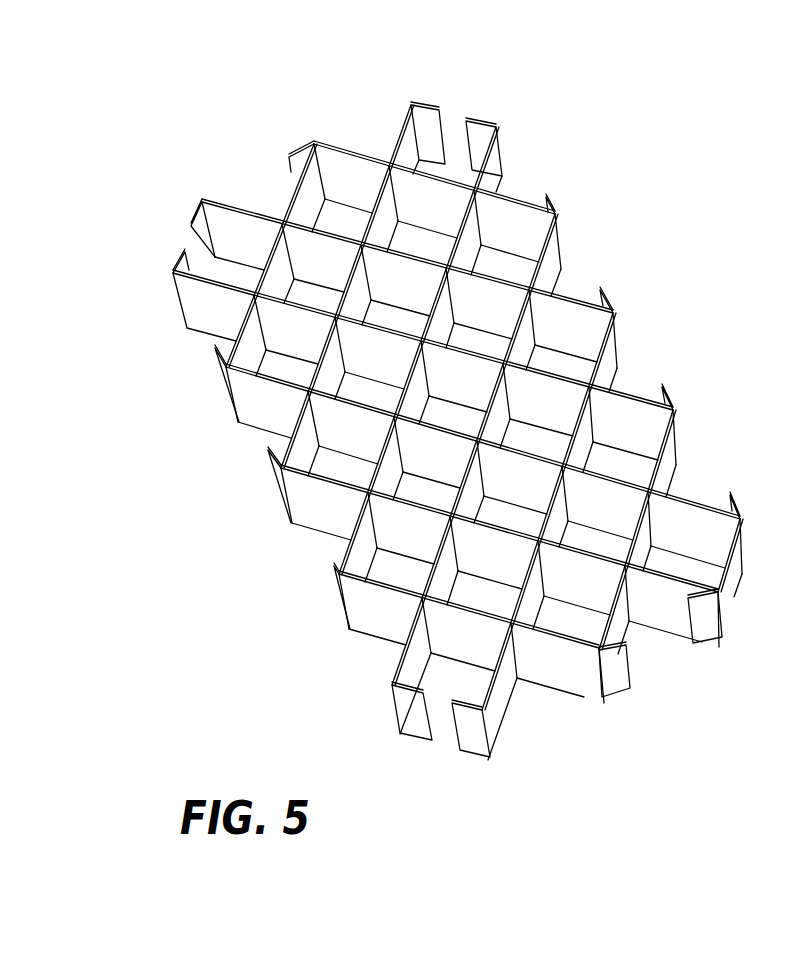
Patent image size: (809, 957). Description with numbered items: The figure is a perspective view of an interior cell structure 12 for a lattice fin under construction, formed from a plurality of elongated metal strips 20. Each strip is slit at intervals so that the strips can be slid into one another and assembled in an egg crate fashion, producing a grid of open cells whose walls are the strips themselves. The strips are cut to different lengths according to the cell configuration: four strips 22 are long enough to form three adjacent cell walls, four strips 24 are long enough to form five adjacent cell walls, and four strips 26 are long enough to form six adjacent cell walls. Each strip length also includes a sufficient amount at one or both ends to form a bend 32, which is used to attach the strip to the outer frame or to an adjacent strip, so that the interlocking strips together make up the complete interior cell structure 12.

The interior cell structure 12 is at (461, 428).
The elongated metal strips 20 is at (500, 193).
The strips 22 is at (282, 202).
The strips 24 is at (488, 428).
The strips 26 is at (263, 413).
The bend 32 is at (487, 120).